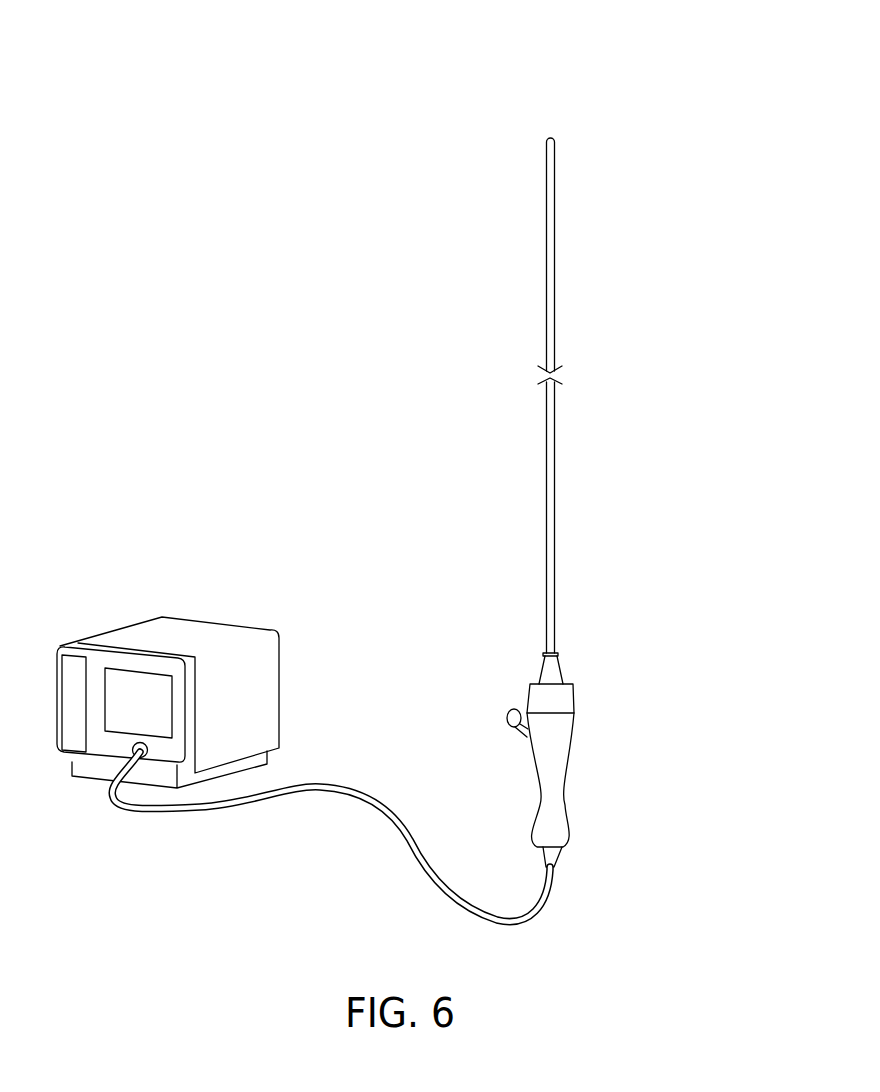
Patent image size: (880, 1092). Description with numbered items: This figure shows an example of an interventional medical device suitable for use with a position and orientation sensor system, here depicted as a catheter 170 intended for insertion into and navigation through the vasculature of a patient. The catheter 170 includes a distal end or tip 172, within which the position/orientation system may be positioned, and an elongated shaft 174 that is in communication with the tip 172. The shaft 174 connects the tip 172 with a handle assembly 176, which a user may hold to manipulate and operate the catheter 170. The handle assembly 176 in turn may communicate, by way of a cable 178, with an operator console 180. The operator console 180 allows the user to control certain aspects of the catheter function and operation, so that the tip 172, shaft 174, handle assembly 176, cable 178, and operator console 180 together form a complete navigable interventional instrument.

The catheter 170 is at (658, 42).
The distal end or tip 172 is at (568, 127).
The shaft 174 is at (556, 264).
The handle assembly 176 is at (575, 730).
The cable 178 is at (380, 812).
The operator console 180 is at (265, 693).